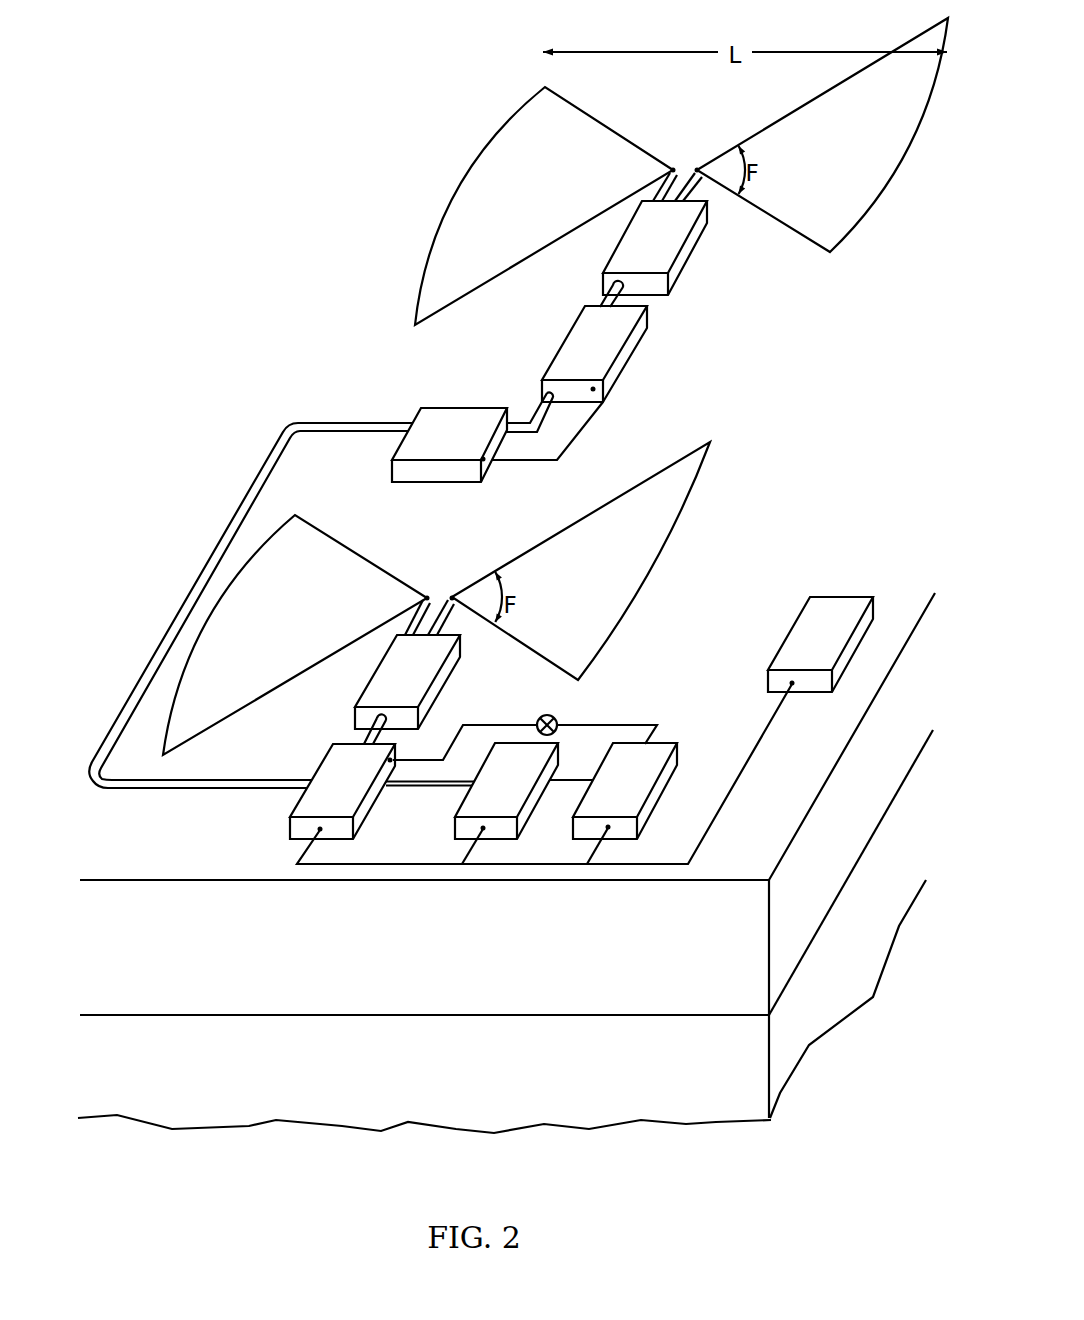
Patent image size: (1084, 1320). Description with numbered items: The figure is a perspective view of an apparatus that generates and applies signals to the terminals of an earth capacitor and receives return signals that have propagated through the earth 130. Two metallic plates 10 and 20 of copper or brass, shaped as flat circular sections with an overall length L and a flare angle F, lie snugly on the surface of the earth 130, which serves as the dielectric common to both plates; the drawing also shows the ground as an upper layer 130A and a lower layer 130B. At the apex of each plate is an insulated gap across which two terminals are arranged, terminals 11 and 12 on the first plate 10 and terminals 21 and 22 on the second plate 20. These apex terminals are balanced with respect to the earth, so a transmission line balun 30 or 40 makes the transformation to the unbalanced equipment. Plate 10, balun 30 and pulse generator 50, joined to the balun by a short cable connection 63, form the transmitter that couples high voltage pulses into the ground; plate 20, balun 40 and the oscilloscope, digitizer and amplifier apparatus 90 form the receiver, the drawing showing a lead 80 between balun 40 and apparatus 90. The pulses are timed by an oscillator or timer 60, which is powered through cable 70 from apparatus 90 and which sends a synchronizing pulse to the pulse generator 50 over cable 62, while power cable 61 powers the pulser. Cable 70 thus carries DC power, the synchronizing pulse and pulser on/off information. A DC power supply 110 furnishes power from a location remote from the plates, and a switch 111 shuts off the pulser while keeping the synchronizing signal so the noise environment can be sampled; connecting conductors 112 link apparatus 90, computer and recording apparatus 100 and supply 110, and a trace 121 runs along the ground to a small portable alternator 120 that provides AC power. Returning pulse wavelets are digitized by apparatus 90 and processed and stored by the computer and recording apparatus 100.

The metallic plate 10 is at (529, 195).
The terminal 11 is at (718, 147).
The terminal 12 is at (649, 146).
The metallic plate 20 is at (283, 628).
The terminal 21 is at (477, 577).
The terminal 22 is at (394, 574).
The transmission line balun 30 is at (638, 251).
The transmission line balun 40 is at (396, 680).
The pulse generator 50 is at (579, 360).
The oscillator or timer 60 is at (434, 448).
The power cable 61 is at (570, 443).
The cable 62 is at (515, 393).
The short cable connection 63 is at (633, 302).
The cable 70 is at (298, 413).
The wire lead 80 is at (362, 735).
The oscilloscope, digitizer and amplifier apparatus 90 is at (331, 795).
The computer and recording apparatus 100 is at (482, 800).
The DC power supply 110 is at (602, 800).
The switch 111 is at (560, 717).
The connecting conductor 112 is at (477, 821).
The portable alternator 120 is at (794, 651).
The conductor trace 121 is at (765, 742).
The earth 130 is at (779, 371).
The substrate upper layer 130A is at (842, 788).
The substrate lower layer 130B is at (541, 1084).